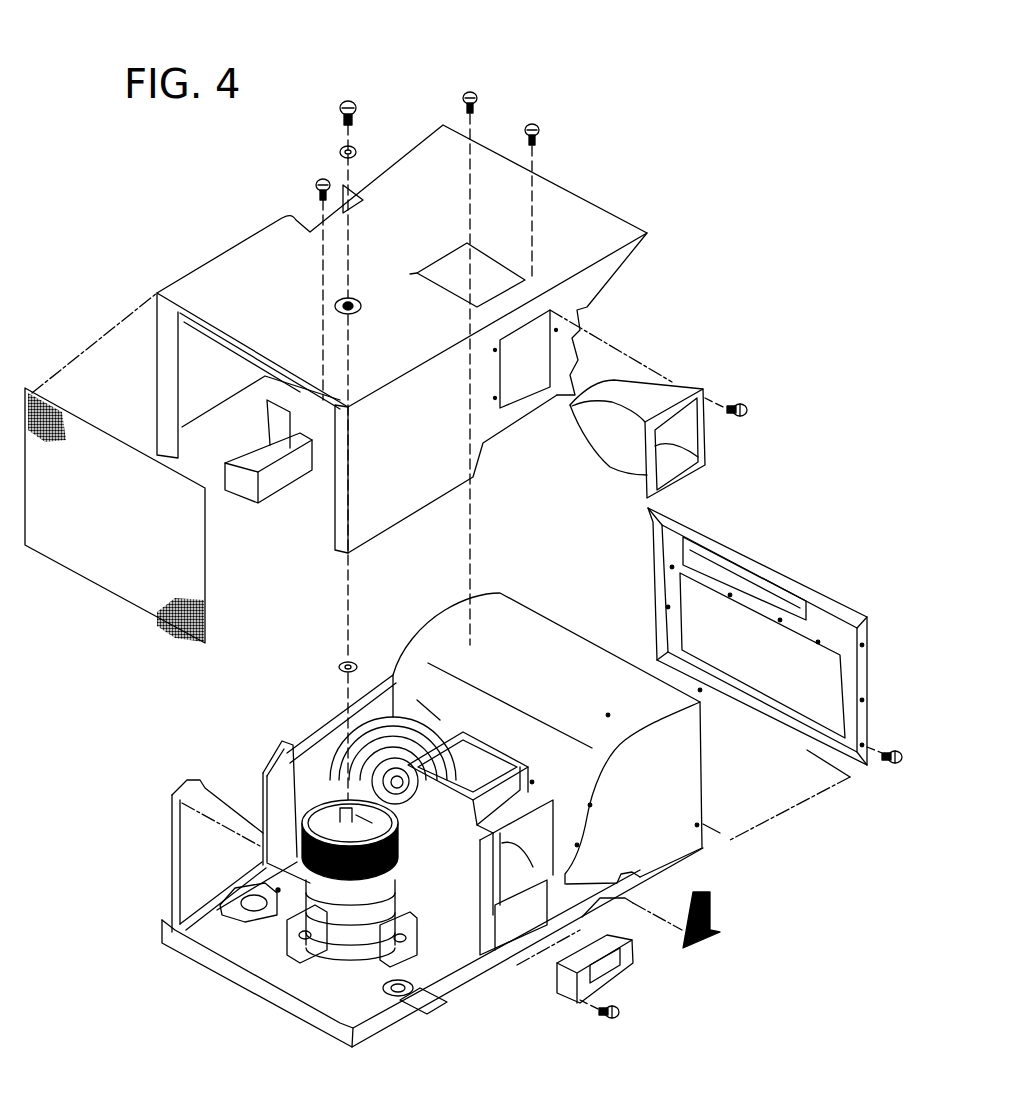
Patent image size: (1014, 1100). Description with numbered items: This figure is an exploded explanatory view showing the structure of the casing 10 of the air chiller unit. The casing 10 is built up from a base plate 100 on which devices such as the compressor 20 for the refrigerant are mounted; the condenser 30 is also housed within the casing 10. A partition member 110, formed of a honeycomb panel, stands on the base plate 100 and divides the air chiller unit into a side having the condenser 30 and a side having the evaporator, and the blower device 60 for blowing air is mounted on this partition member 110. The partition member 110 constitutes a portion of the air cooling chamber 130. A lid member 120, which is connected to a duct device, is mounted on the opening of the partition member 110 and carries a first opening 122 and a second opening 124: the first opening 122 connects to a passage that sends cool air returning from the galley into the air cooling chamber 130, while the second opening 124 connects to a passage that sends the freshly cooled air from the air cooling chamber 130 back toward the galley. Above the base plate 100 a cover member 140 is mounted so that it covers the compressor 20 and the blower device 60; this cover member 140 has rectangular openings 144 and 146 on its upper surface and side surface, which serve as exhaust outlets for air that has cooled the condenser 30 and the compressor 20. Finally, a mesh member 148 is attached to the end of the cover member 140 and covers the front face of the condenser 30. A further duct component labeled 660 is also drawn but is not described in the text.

The casing 10 is at (660, 253).
The compressor 20 is at (318, 850).
The condenser 30 is at (195, 833).
The blower device 60 is at (450, 693).
The base plate 100 is at (462, 973).
The partition member 110 is at (509, 628).
The lid member 120 is at (807, 597).
The first opening 122 is at (803, 687).
The second opening 124 is at (717, 567).
The air cooling chamber 130 is at (608, 640).
The cover member 140 is at (218, 283).
The rectangular opening 144 is at (500, 280).
The rectangular opening 146 is at (527, 340).
The mesh member 148 is at (177, 630).
The exhaust duct 660 is at (668, 372).